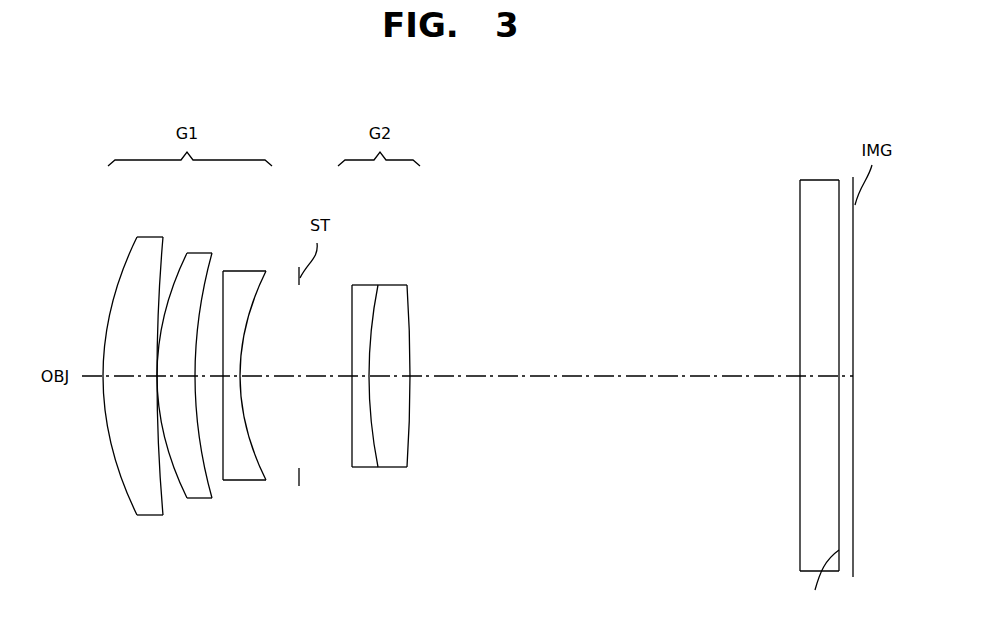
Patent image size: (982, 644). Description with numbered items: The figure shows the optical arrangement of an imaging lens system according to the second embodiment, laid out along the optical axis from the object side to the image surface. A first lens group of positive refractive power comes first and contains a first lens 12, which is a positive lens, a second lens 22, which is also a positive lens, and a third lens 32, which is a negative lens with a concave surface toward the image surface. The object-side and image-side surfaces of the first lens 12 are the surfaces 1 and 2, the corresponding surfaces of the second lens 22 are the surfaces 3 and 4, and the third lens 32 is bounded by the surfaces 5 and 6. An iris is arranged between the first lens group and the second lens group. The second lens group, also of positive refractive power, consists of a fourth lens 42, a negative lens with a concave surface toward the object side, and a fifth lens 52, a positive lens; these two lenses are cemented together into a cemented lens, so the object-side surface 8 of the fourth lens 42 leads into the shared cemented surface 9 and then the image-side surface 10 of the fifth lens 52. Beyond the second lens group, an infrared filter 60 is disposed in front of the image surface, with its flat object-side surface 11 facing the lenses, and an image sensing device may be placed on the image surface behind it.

The object-side surface of first lens 1 is at (134, 500).
The image-side surface of first lens 2 is at (162, 497).
The object-side surface of second lens 3 is at (188, 497).
The image-side surface of second lens 4 is at (211, 475).
The object-side surface of third lens 5 is at (224, 451).
The image-side surface of third lens 6 is at (266, 452).
The object-side surface of fourth lens 8 is at (352, 450).
The cemented surface of fourth and fifth lenses 9 is at (376, 455).
The image-side surface of fifth lens 10 is at (407, 450).
The object-side surface of infrared filter 11 is at (800, 532).
The first lens 12 is at (135, 380).
The second lens 22 is at (197, 385).
The third lens 32 is at (262, 379).
The fourth lens 42 is at (362, 384).
The fifth lens 52 is at (414, 369).
The infrared filter 60 is at (798, 364).